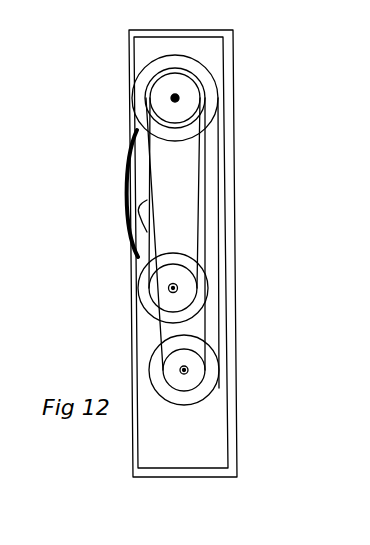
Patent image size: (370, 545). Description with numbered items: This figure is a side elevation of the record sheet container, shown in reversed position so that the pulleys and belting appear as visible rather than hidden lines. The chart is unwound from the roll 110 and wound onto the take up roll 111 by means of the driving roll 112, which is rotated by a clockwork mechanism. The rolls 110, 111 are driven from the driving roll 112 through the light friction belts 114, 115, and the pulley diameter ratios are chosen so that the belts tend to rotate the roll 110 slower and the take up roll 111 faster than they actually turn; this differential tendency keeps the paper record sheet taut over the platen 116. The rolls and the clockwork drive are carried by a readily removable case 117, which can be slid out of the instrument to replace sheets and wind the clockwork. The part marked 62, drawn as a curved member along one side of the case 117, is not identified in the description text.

The belt guide shoe 62 is at (129, 136).
The idler pulley 110 is at (143, 305).
The driven pulley 111 is at (219, 388).
The drive pulley 112 is at (213, 77).
The belt run 114 is at (147, 196).
The belt run 115 is at (153, 228).
The belt twist region 116 is at (139, 214).
The housing 117 is at (227, 444).